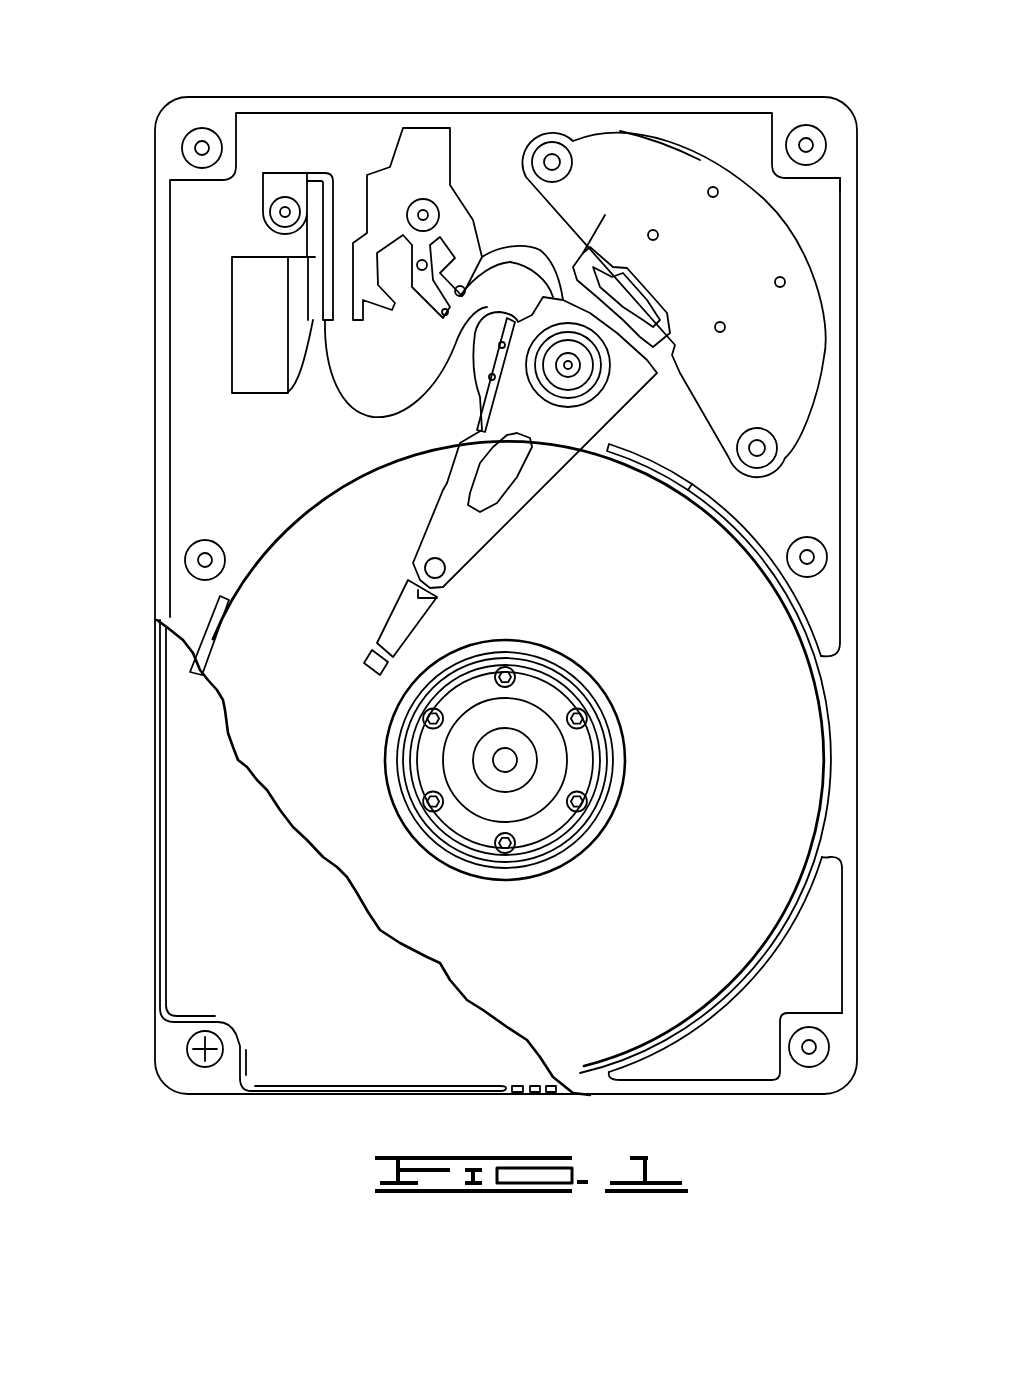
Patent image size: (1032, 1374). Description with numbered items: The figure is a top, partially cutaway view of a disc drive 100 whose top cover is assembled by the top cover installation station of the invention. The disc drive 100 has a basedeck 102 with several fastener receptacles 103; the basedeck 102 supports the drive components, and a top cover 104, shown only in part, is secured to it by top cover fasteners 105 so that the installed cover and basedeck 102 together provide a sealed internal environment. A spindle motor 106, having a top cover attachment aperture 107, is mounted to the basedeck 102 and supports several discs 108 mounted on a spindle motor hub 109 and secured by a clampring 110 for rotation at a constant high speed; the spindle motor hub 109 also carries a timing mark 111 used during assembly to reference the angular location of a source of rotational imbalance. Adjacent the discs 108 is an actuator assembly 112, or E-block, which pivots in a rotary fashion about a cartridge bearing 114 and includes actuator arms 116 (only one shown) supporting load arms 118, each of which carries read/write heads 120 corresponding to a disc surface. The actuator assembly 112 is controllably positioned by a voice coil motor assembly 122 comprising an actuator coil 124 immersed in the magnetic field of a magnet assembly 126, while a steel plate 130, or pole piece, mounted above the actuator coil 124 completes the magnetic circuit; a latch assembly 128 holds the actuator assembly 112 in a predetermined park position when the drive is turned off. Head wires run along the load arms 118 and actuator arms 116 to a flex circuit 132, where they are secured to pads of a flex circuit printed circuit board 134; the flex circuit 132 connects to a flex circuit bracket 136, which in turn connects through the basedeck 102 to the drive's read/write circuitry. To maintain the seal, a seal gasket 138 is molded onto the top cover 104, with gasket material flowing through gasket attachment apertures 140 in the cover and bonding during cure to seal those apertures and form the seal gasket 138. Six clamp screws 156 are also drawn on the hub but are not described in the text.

The disc drive 100 is at (262, 71).
The basedeck 102 is at (245, 460).
The fastener receptacles 103 is at (196, 142).
The top cover 104 is at (195, 905).
The top cover fasteners 105 is at (190, 1062).
The spindle motor 106 is at (520, 800).
The top cover attachment aperture 107 is at (500, 772).
The discs 108 is at (752, 848).
The spindle motor hub 109 is at (580, 757).
The clampring 110 is at (399, 803).
The timing mark 111 is at (540, 690).
The actuator assembly 112 is at (548, 450).
The cartridge bearing 114 is at (665, 485).
The actuator arms 116 is at (443, 545).
The load arms 118 is at (393, 627).
The read/write heads 120 is at (365, 663).
The voice coil motor assembly 122 is at (812, 213).
The actuator coil 124 is at (593, 268).
The magnet assembly 126 is at (585, 145).
The latch assembly 128 is at (423, 150).
The steel plate 130 is at (698, 168).
The flex circuit 132 is at (360, 424).
The flex circuit printed circuit board 134 is at (478, 407).
The flex circuit bracket 136 is at (232, 327).
The seal gasket 138 is at (160, 705).
The gasket attachment apertures 140 is at (548, 1092).
The clamp screws 156 is at (505, 667).